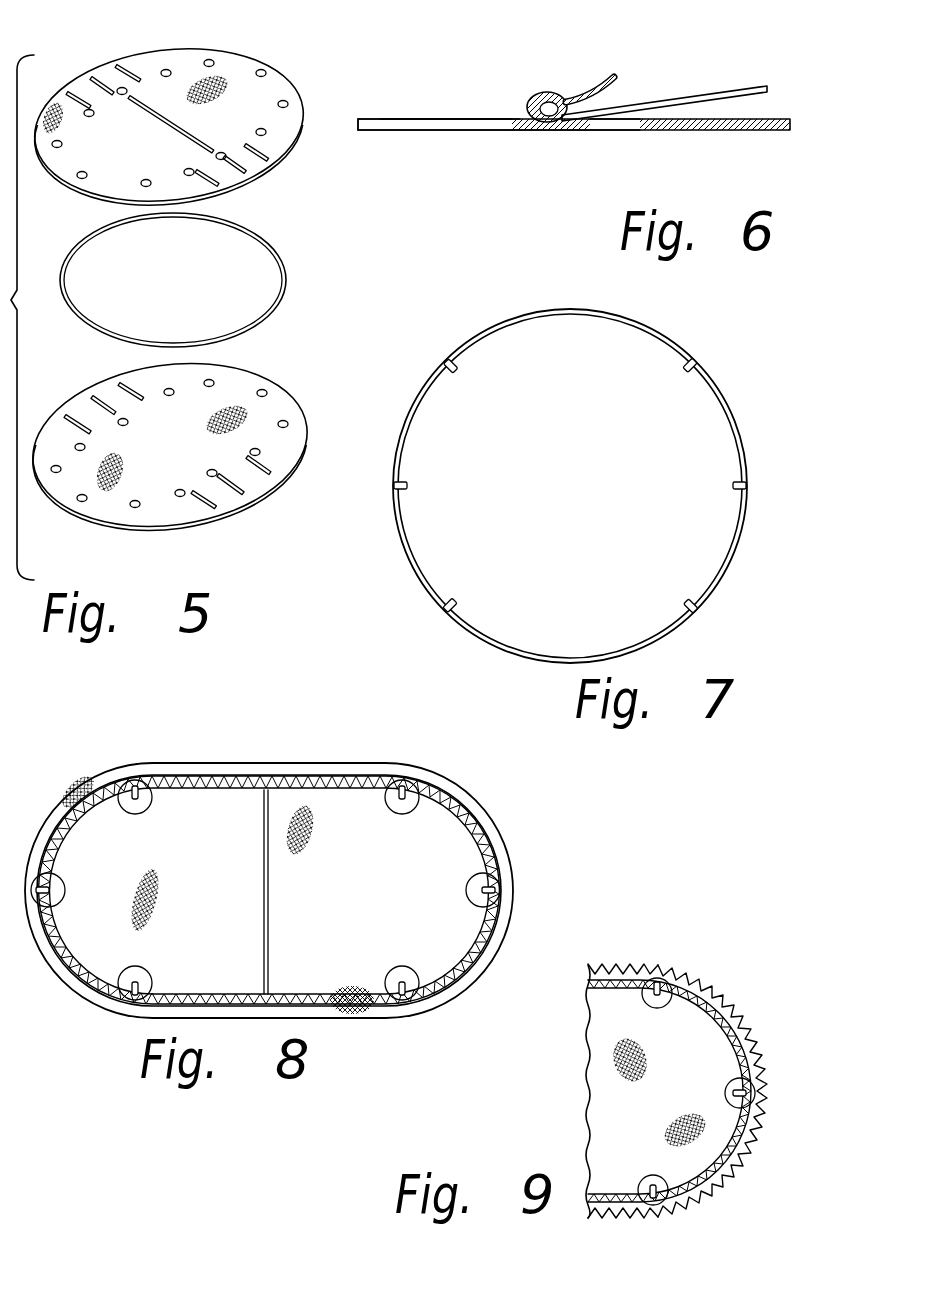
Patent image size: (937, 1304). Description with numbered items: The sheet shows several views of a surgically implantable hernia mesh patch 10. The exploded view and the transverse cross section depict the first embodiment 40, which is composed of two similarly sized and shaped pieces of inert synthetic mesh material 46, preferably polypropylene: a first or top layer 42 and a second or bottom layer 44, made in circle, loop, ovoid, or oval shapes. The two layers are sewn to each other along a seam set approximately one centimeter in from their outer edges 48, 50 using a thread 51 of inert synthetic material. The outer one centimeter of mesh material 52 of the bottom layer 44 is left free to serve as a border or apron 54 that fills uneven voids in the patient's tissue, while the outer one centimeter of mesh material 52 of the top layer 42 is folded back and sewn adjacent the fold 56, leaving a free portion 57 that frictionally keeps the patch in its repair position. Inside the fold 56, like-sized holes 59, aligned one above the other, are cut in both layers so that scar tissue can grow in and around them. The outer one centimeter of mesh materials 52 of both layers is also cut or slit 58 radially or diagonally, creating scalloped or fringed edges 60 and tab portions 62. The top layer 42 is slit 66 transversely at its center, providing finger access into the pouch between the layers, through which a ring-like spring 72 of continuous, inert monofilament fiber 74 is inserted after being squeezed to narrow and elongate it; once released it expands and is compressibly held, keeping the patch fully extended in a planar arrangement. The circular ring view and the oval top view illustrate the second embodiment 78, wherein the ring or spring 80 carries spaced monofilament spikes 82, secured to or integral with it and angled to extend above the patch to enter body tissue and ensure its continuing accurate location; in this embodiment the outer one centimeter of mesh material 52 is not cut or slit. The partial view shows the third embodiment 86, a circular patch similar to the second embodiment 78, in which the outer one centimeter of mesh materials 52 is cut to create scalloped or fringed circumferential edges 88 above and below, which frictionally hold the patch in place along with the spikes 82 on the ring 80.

In FIG. 5, the hernia mesh patch 10 is at (126, 54).
In FIG. 6, the hernia mesh patch 10 is at (579, 120).
In FIG. 8, the hernia mesh patch 10 is at (293, 875).
In FIG. 9, the hernia mesh patch 10 is at (662, 1070).
In FIG. 5, the embodiment 40 is at (160, 44).
In FIG. 6, the embodiment 40 is at (574, 126).
In FIG. 5, the top layer 42 is at (219, 44).
In FIG. 6, the top layer 42 is at (681, 87).
In FIG. 8, the top layer 42 is at (296, 882).
In FIG. 9, the top layer 42 is at (587, 1026).
In FIG. 5, the bottom layer 44 is at (248, 367).
In FIG. 6, the bottom layer 44 is at (658, 134).
In FIG. 5, the synthetic mesh material 46 is at (228, 80).
In FIG. 5, the outer edge 48 is at (105, 196).
In FIG. 8, the outer edge 48 is at (506, 856).
In FIG. 5, the outer edge 50 is at (130, 522).
In FIG. 6, the thread 51 is at (530, 131).
In FIG. 5, the outer one centimeter of mesh material 52 is at (292, 74).
In FIG. 6, the outer one centimeter of mesh material 52 is at (366, 132).
In FIG. 8, the outer one centimeter of mesh material 52 is at (455, 790).
In FIG. 6, the border or apron 54 is at (485, 134).
In FIG. 6, the fold 56 is at (587, 120).
In FIG. 6, the free portion 57 is at (608, 79).
In FIG. 5, the slit 58 is at (272, 160).
In FIG. 6, the slit 58 is at (428, 132).
In FIG. 5, the holes 59 is at (288, 104).
In FIG. 6, the holes 59 is at (630, 104).
In FIG. 5, the scalloped or fringed edges 60 is at (245, 184).
In FIG. 6, the scalloped or fringed edges 60 is at (380, 86).
In FIG. 5, the tab portions 62 is at (262, 176).
In FIG. 6, the tab portions 62 is at (413, 117).
In FIG. 6, the slit 66 is at (704, 96).
In FIG. 8, the slit 66 is at (262, 880).
In FIG. 5, the spring 72 is at (291, 262).
In FIG. 6, the spring 72 is at (552, 134).
In FIG. 5, the monofilament fiber 74 is at (288, 296).
In FIG. 7, the monofilament fiber 74 is at (505, 324).
In FIG. 7, the second embodiment 78 is at (662, 329).
In FIG. 8, the second embodiment 78 is at (170, 762).
In FIG. 7, the ring or spring 80 is at (570, 481).
In FIG. 8, the ring or spring 80 is at (330, 777).
In FIG. 9, the ring or spring 80 is at (716, 994).
In FIG. 7, the monofilament spikes 82 is at (462, 376).
In FIG. 8, the monofilament spikes 82 is at (396, 802).
In FIG. 9, the monofilament spikes 82 is at (656, 998).
In FIG. 9, the third embodiment 86 is at (659, 963).
In FIG. 9, the scalloped or fringed circumferential edges 88 is at (751, 1021).